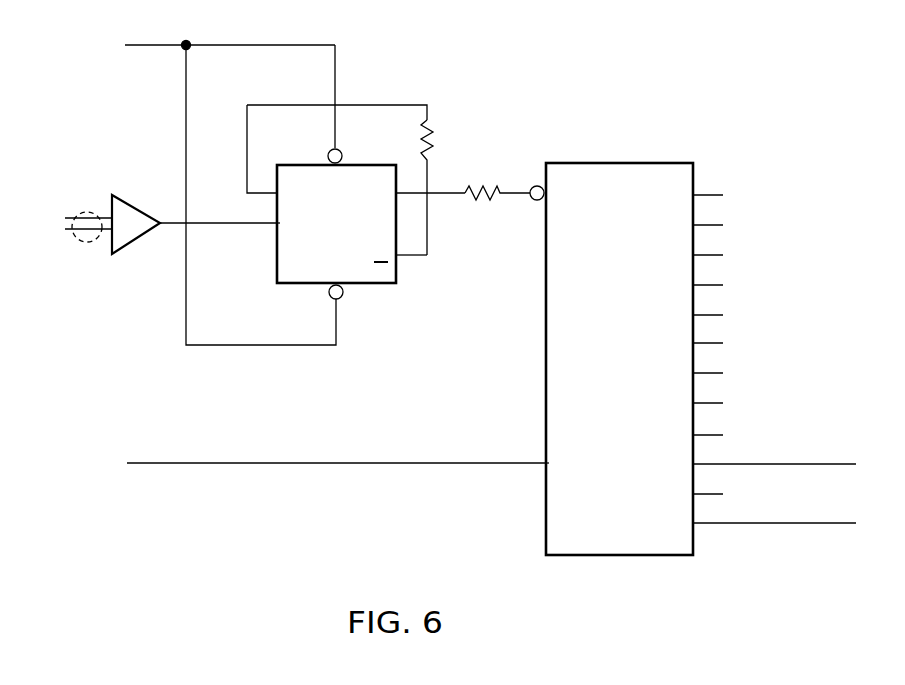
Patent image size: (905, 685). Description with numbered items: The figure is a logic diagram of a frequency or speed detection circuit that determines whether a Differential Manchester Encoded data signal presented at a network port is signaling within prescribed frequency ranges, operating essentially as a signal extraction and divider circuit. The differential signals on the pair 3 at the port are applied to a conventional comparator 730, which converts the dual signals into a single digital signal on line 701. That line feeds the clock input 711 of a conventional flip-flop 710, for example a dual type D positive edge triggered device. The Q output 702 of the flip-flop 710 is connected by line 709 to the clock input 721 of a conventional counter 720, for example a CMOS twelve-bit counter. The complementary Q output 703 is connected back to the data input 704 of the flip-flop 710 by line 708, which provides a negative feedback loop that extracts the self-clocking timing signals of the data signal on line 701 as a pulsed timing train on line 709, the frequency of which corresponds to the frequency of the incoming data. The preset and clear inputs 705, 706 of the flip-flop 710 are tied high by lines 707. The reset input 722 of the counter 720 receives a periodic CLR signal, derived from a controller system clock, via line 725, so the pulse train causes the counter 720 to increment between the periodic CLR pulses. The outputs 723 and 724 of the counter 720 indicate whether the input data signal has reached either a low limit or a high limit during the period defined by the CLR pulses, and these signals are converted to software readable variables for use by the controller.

The pair 3 is at (95, 238).
The line 701 is at (207, 228).
The Q output 702 is at (418, 190).
The Q-bar output 703 is at (400, 258).
The data input 704 is at (291, 119).
The preset input 705 is at (342, 158).
The clear input 706 is at (328, 292).
The lines 707 is at (267, 45).
The line 708 is at (365, 105).
The line 709 is at (510, 190).
The flip-flop 710 is at (365, 285).
The clock input 711 is at (275, 222).
The counter 720 is at (603, 135).
The clock input 721 is at (545, 200).
The reset input 722 is at (550, 468).
The output 723 is at (758, 463).
The output 724 is at (765, 525).
The line 725 is at (385, 463).
The comparator 730 is at (133, 245).